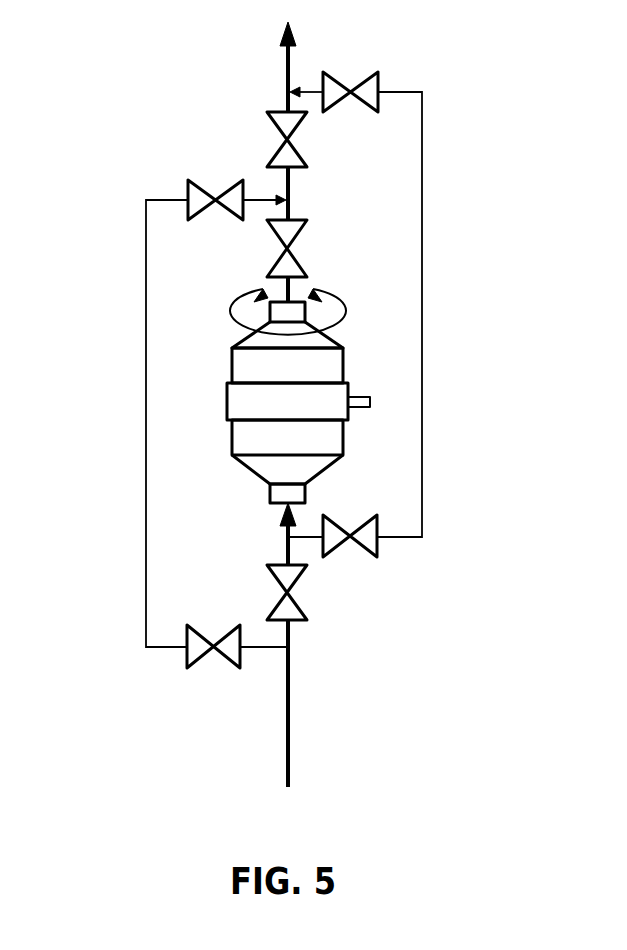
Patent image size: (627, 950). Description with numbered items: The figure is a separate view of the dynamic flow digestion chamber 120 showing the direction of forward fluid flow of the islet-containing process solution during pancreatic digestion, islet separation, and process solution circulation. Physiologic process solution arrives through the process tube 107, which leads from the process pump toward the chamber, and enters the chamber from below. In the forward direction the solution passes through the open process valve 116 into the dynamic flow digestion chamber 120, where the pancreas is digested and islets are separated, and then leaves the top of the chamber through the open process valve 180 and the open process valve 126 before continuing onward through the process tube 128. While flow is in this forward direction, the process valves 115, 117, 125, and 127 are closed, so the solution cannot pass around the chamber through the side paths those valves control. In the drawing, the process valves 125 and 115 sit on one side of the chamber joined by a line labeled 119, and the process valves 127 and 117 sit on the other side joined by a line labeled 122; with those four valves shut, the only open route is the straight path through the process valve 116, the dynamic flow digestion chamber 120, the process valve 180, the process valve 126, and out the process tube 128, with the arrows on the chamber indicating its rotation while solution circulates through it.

The process tube 107 is at (287, 730).
The process valve 115 is at (187, 668).
The process valve 116 is at (307, 620).
The process valve 117 is at (377, 557).
The bypass line 119 is at (145, 434).
The dynamic flow digestion chamber 120 is at (345, 435).
The bypass line 122 is at (421, 318).
The process valve 125 is at (188, 180).
The process valve 126 is at (268, 112).
The process valve 127 is at (378, 72).
The process tube 128 is at (287, 70).
The process valve 180 is at (307, 222).